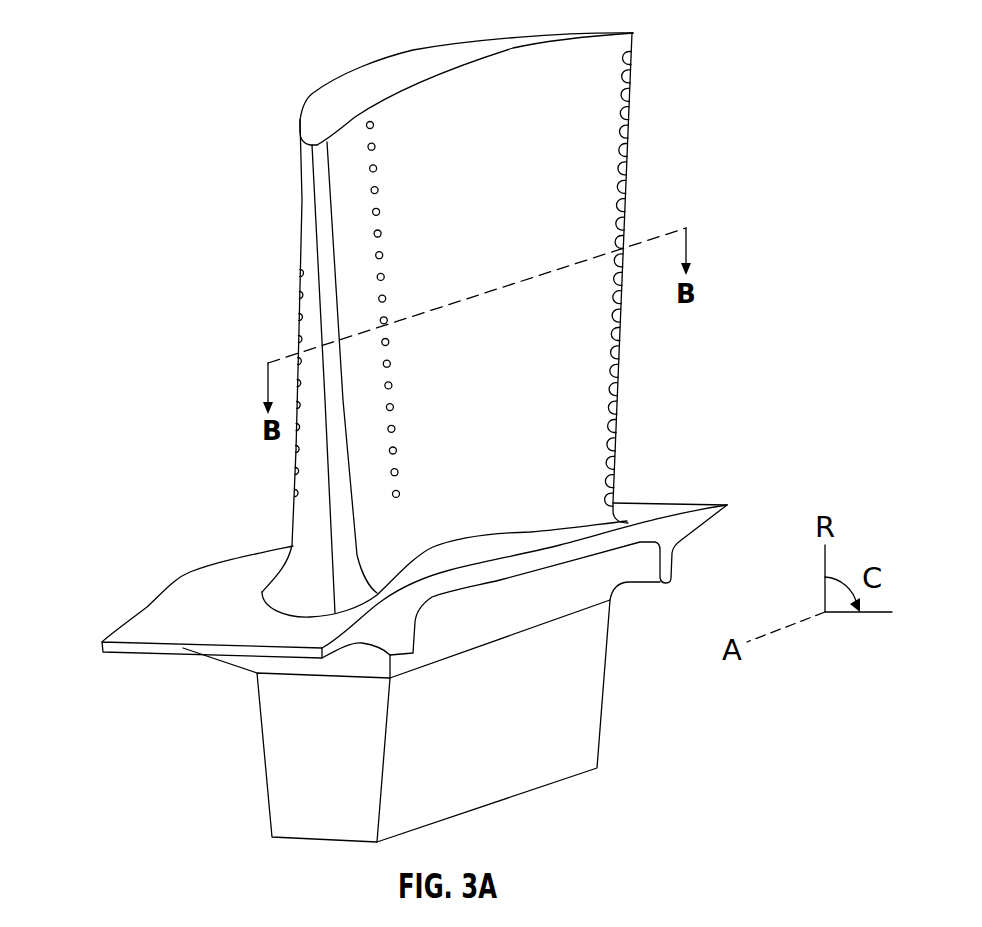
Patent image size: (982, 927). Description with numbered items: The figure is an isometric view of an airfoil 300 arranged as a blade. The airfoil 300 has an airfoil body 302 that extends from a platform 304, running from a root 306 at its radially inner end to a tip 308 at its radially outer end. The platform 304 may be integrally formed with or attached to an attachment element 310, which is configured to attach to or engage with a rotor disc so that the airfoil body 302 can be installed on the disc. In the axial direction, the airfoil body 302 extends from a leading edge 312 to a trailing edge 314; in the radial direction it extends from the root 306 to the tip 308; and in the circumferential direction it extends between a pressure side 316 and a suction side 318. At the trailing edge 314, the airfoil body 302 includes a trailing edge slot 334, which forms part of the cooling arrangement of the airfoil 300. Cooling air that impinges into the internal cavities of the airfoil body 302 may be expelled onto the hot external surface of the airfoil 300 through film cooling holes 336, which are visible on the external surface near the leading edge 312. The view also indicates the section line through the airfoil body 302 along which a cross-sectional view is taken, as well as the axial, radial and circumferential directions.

The airfoil 300 is at (145, 207).
The airfoil body 302 is at (535, 42).
The platform 304 is at (102, 643).
The root 306 is at (280, 600).
The tip 308 is at (358, 80).
The attachment element 310 is at (580, 727).
The leading edge 312 is at (327, 452).
The trailing edge 314 is at (620, 437).
The pressure side 316 is at (558, 192).
The suction side 318 is at (294, 327).
The trailing edge slot 334 is at (629, 359).
The film cooling holes 336 is at (390, 297).